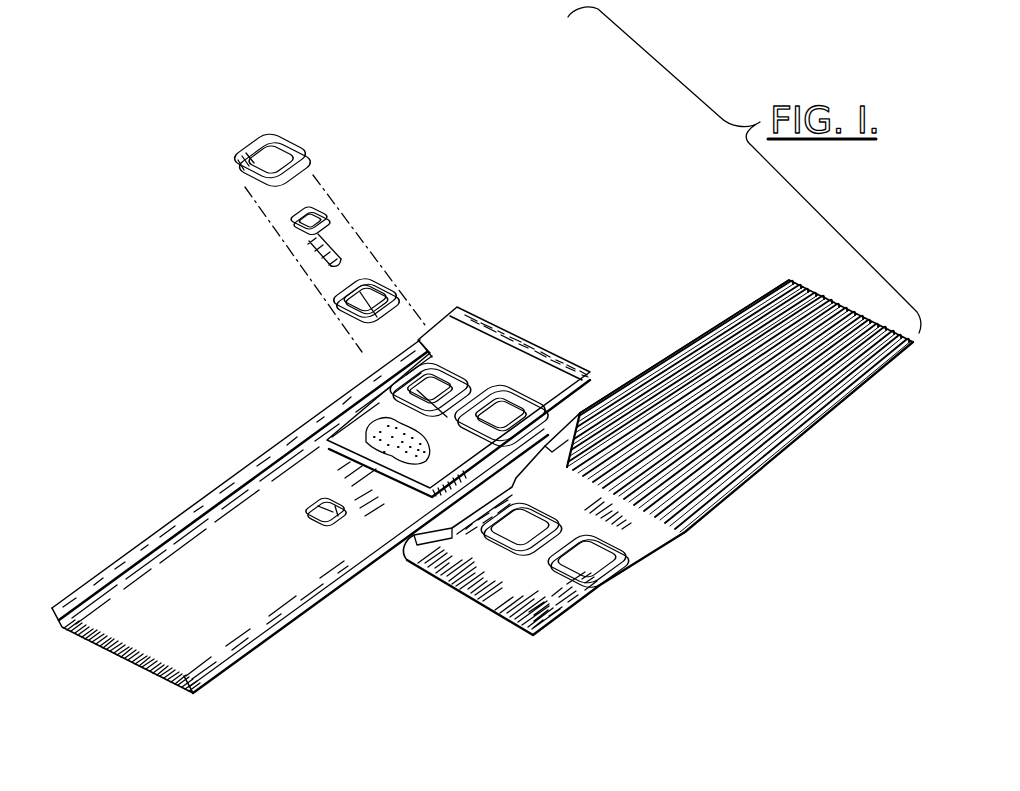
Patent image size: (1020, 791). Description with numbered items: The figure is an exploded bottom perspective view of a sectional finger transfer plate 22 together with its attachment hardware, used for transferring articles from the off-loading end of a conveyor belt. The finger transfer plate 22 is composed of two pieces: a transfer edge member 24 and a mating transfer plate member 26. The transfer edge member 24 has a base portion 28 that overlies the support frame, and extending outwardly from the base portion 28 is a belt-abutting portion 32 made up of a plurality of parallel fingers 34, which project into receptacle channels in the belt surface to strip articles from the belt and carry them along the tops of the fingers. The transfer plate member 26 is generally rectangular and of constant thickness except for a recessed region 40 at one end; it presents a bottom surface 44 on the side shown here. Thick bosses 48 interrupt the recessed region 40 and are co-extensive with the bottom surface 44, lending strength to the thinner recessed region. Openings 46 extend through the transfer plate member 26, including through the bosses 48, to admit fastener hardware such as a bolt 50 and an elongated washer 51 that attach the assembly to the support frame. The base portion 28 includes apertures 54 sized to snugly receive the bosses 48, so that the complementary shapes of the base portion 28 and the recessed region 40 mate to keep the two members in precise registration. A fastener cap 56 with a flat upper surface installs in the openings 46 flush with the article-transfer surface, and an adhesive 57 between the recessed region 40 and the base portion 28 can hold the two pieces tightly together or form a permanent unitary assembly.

The sectional finger transfer plate 22 is at (527, 263).
The transfer edge member 24 is at (537, 603).
The transfer plate member 26 is at (206, 663).
The base portion 28 is at (478, 590).
The belt-abutting portion 32 is at (735, 367).
The parallel fingers 34 is at (667, 360).
The recessed region 40 is at (517, 355).
The bottom surface 44 is at (265, 588).
The openings 46 is at (325, 518).
The bosses 48 is at (433, 362).
The bolt 50 is at (332, 230).
The elongated washer 51 is at (377, 283).
The apertures 54 is at (597, 555).
The fastener cap 56 is at (286, 152).
The adhesive 57 is at (372, 420).